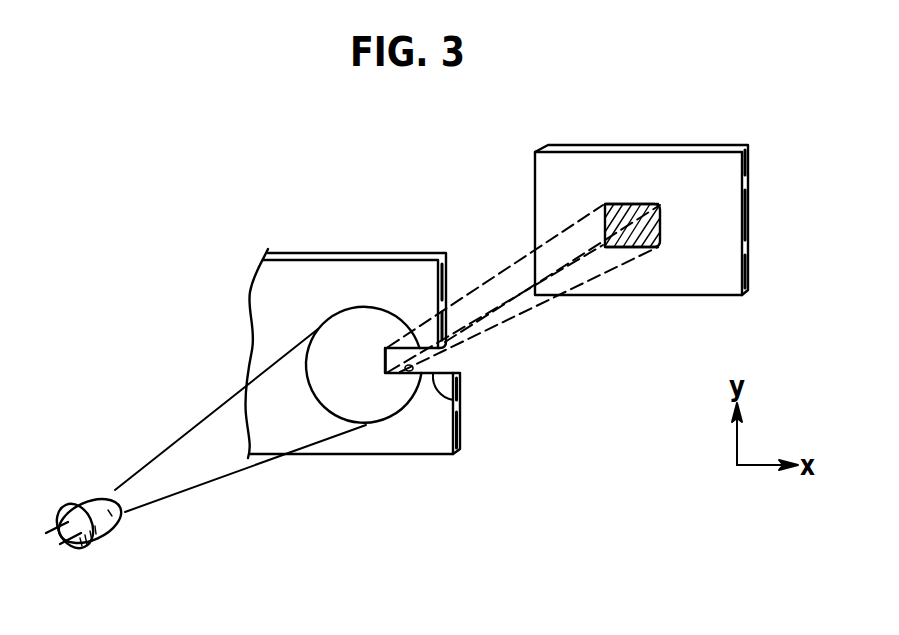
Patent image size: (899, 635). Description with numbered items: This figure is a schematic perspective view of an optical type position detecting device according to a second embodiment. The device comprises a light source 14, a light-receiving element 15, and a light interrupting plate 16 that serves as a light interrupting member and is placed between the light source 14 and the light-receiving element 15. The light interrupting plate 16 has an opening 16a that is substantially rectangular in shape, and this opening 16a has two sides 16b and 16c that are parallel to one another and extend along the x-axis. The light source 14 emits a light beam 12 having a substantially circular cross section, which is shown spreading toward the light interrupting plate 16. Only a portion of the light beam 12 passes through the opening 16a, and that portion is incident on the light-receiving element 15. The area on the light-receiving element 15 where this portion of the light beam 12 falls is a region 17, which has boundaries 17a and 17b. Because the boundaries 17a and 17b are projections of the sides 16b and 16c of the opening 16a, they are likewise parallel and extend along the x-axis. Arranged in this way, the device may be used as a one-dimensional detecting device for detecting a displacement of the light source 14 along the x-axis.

The light beam 12 is at (198, 426).
The light source 14 is at (102, 498).
The light-receiving element 15 is at (708, 168).
The light interrupting plate 16 is at (296, 256).
The opening 16a is at (418, 375).
The side 16b is at (447, 346).
The side 16c is at (432, 376).
The region 17 is at (622, 205).
The boundary 17a is at (608, 204).
The boundary 17b is at (627, 248).